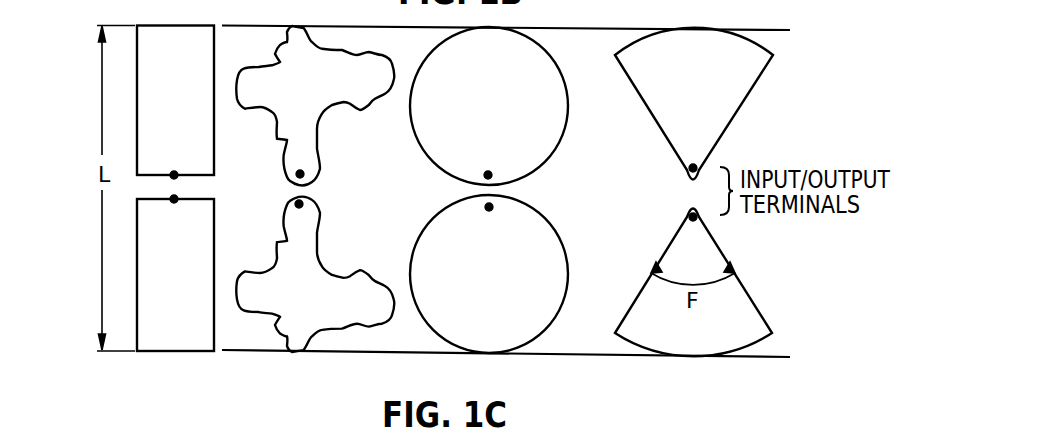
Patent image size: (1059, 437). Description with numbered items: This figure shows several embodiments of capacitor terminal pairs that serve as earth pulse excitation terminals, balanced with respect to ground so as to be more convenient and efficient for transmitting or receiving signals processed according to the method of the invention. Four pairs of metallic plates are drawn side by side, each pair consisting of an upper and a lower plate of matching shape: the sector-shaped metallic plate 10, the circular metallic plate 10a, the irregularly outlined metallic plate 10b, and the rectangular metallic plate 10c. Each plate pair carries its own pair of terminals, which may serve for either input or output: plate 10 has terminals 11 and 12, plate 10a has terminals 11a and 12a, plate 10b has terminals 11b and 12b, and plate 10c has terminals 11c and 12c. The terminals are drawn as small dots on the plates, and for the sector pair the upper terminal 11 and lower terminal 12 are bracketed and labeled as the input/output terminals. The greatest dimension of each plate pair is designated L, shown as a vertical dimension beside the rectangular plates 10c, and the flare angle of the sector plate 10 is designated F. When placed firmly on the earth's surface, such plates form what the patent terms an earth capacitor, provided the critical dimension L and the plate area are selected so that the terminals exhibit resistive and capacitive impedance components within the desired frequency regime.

The metallic plate 10 is at (667, 143).
The metallic plate 10a is at (477, 190).
The metallic plate 10b is at (306, 189).
The metallic plate 10c is at (137, 70).
The terminal 11 is at (677, 127).
The terminal 11a is at (512, 148).
The terminal 11b is at (300, 174).
The terminal 11c is at (185, 154).
The terminal 12 is at (665, 204).
The terminal 12a is at (460, 235).
The terminal 12b is at (299, 204).
The terminal 12c is at (186, 234).